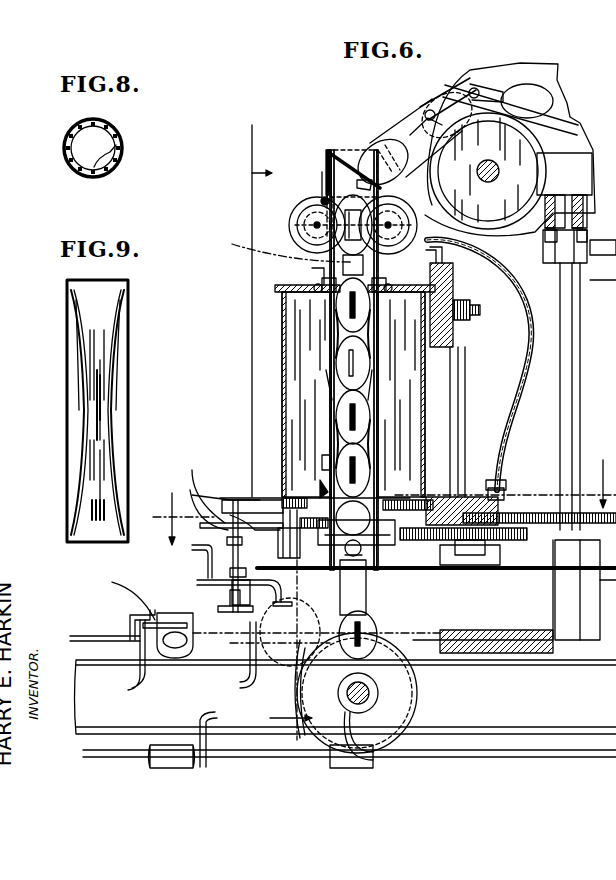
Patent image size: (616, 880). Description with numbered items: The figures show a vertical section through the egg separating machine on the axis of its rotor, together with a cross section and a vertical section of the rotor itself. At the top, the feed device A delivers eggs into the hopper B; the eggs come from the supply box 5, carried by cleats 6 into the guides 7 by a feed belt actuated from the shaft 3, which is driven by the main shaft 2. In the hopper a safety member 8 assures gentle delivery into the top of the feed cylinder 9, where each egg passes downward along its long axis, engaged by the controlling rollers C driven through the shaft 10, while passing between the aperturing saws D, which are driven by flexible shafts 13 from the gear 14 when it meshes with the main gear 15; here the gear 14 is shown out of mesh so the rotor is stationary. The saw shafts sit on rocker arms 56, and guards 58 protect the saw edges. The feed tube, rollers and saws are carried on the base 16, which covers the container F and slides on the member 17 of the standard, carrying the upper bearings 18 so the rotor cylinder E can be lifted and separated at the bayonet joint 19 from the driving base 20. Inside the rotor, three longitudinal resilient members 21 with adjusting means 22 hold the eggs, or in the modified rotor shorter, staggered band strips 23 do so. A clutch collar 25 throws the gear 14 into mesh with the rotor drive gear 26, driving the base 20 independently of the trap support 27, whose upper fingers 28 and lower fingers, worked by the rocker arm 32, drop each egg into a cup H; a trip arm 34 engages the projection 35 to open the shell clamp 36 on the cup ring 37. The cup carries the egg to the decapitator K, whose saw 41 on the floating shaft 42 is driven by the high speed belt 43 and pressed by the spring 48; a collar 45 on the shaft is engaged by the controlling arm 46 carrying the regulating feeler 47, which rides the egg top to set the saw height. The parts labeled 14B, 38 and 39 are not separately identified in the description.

In FIG. 6, the feed device A is at (537, 122).
In FIG. 6, the supply box 5 is at (542, 68).
In FIG. 6, the guides 7 is at (590, 97).
In FIG. 6, the cleats 6 is at (580, 127).
In FIG. 6, the shaft 3 is at (598, 143).
In FIG. 6, the controlling rollers C is at (412, 135).
In FIG. 6, the hopper B is at (326, 172).
In FIG. 6, the safety member 8 is at (350, 150).
In FIG. 6, the feed cylinder 9 is at (318, 190).
In FIG. 6, the shaft 10 is at (314, 222).
In FIG. 6, the aperturing saws D is at (279, 253).
In FIG. 6, the upper bearings 18 is at (314, 283).
In FIG. 6, the base 16 is at (280, 289).
In FIG. 8, the rotor cylinder E is at (66, 158).
In FIG. 9, the rotor cylinder E is at (67, 320).
In FIG. 6, the rotor cylinder E is at (335, 340).
In FIG. 6, the longitudinal resilient members 21 is at (324, 388).
In FIG. 6, the container F is at (283, 392).
In FIG. 6, the adjusting means 22 is at (322, 461).
In FIG. 6, the bayonet joint 19 is at (320, 488).
In FIG. 6, the spring 48 is at (200, 475).
In FIG. 6, the high speed belt 43 is at (200, 490).
In FIG. 6, the shaft 42 is at (197, 507).
In FIG. 6, the guards 58 is at (603, 254).
In FIG. 6, the rocker arms 56 is at (603, 299).
In FIG. 6, the flexible shafts 13 is at (530, 330).
In FIG. 6, the main shaft 2 is at (576, 379).
In FIG. 6, the member of the standard 17 is at (447, 373).
In FIG. 6, the base plate part 14B is at (400, 430).
In FIG. 6, the rotor drive gear 26 is at (416, 470).
In FIG. 6, the main gear 15 is at (593, 495).
In FIG. 6, the collar 45 is at (234, 565).
In FIG. 6, the saw 41 is at (185, 600).
In FIG. 6, the shell clamp 36 is at (172, 614).
In FIG. 6, the controlling arm 46 is at (212, 582).
In FIG. 6, the regulating feeler 47 is at (287, 612).
In FIG. 6, the rod 38 is at (90, 637).
In FIG. 6, the cup ring 37 is at (121, 637).
In FIG. 6, the cups H is at (121, 597).
In FIG. 6, the trip arm 34 is at (213, 720).
In FIG. 6, the decapitator K is at (237, 615).
In FIG. 6, the upper fingers 28 is at (363, 528).
In FIG. 6, the driving base 20 is at (397, 545).
In FIG. 6, the trap support 27 is at (392, 572).
In FIG. 6, the rocker arm 32 is at (416, 644).
In FIG. 6, the clutch collar 25 is at (470, 556).
In FIG. 6, the gear 14 is at (517, 560).
In FIG. 6, the projection 35 is at (380, 690).
In FIG. 6, the bracket 39 is at (392, 740).
In FIG. 8, the band strips 23 is at (112, 151).
In FIG. 9, the band strips 23 is at (96, 400).